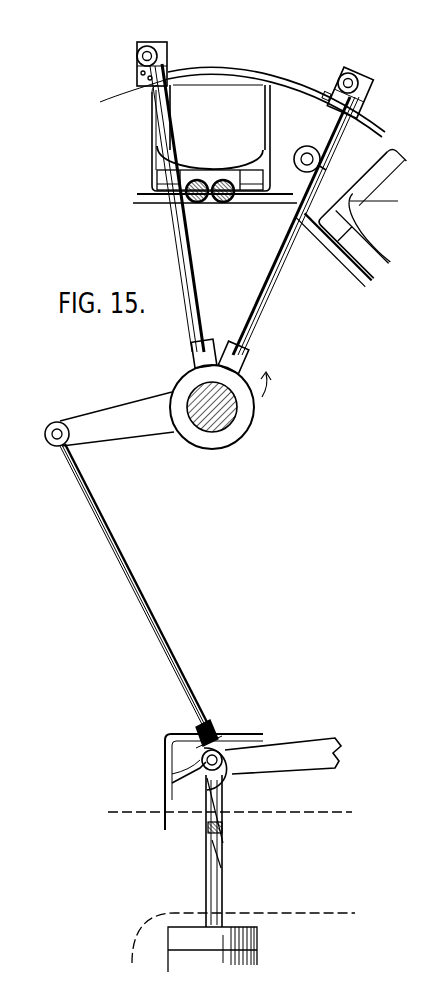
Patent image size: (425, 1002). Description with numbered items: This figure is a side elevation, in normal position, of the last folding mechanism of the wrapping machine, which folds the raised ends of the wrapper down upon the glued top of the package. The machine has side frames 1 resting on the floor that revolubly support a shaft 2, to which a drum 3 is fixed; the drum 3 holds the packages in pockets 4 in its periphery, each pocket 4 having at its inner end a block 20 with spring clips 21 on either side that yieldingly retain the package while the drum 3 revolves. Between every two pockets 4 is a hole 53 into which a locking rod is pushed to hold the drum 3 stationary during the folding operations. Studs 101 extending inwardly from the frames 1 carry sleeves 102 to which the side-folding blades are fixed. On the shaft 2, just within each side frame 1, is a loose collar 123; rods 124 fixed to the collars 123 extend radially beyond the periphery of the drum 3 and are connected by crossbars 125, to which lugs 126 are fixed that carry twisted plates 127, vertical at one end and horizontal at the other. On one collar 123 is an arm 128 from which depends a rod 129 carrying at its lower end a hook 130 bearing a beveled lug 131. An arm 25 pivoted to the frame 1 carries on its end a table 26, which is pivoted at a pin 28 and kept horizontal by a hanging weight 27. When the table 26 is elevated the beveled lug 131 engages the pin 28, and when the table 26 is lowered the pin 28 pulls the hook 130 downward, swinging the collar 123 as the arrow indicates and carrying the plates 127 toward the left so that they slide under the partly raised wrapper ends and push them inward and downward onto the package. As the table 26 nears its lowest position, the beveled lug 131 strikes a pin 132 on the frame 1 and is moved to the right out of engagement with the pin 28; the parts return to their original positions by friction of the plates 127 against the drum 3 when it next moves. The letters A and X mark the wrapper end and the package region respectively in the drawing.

The side frame 1 is at (320, 813).
The shaft 2 is at (226, 425).
The drum 3 is at (215, 214).
The pocket 4 is at (362, 163).
The block 20 is at (160, 182).
The spring clip 21 is at (152, 152).
The arm 25 is at (283, 756).
The table 26 is at (170, 752).
The weight 27 is at (243, 942).
The pin 28 is at (200, 768).
The hole 53 is at (308, 146).
The stud 101 is at (203, 206).
The sleeve 102 is at (228, 206).
The collar 123 is at (242, 415).
The rod 124 is at (270, 266).
The crossbar 125 is at (147, 45).
The lug 126 is at (140, 76).
The twisted plate 127 is at (216, 72).
The arm 128 is at (109, 419).
The rod 129 is at (127, 572).
The hook 130 is at (227, 752).
The beveled lug 131 is at (224, 793).
The pin 132 is at (227, 828).
The position A is at (264, 83).
The article X is at (211, 127).